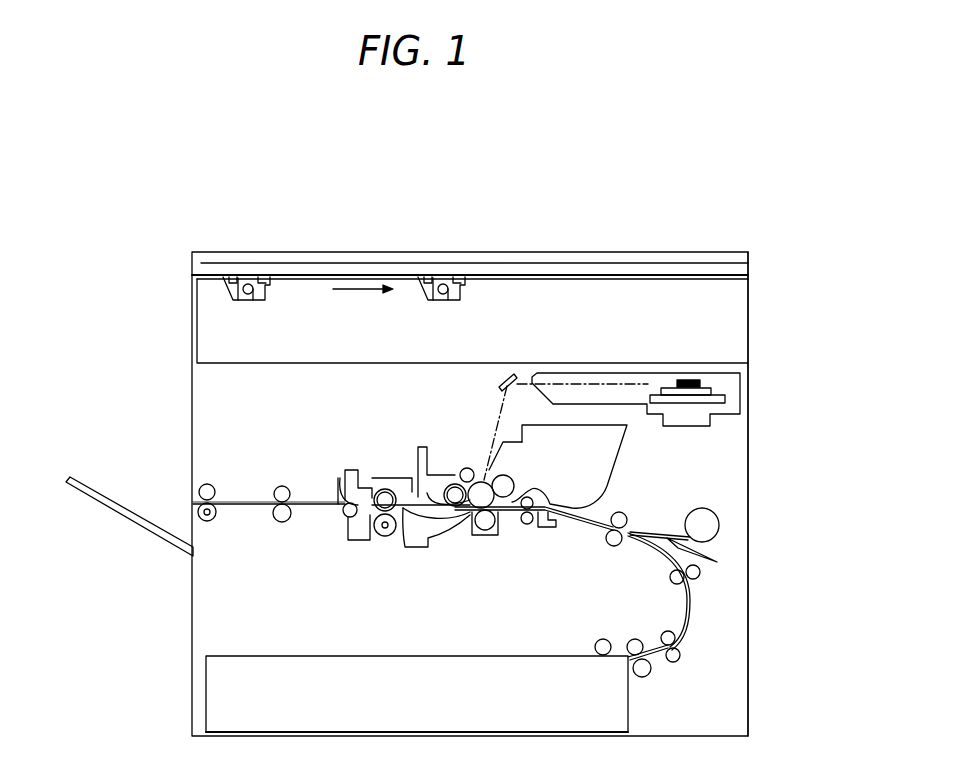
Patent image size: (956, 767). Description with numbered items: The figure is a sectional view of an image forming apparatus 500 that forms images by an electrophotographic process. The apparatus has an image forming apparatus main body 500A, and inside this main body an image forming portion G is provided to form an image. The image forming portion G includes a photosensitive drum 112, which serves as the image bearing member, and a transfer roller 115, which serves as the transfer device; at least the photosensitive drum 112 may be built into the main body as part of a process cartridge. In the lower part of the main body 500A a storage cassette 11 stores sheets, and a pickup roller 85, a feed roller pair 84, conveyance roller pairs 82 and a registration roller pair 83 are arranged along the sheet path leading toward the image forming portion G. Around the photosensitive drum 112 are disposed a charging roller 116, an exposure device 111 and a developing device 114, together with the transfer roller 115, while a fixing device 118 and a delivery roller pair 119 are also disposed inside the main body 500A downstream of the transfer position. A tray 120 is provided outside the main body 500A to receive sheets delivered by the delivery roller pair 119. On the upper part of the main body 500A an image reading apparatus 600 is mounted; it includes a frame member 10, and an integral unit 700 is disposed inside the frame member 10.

The image forming apparatus 500 is at (556, 212).
The image forming apparatus main body 500A is at (748, 496).
The image reading apparatus 600 is at (184, 330).
The integral unit 700 is at (245, 280).
The frame member 10 is at (647, 305).
The exposure device 111 is at (725, 380).
The photosensitive drum 112 is at (478, 474).
The developing device 114 is at (627, 440).
The charging roller 116 is at (463, 468).
The fixing device 118 is at (387, 487).
The delivery roller pair 119 is at (210, 480).
The tray 120 is at (93, 480).
The transfer roller 115 is at (485, 529).
The registration roller pair 83 is at (527, 523).
The conveyance roller pairs 82 is at (619, 521).
The feed roller pair 84 is at (633, 640).
The pickup roller 85 is at (603, 644).
The storage cassette 11 is at (365, 730).
The image forming portion G is at (403, 418).